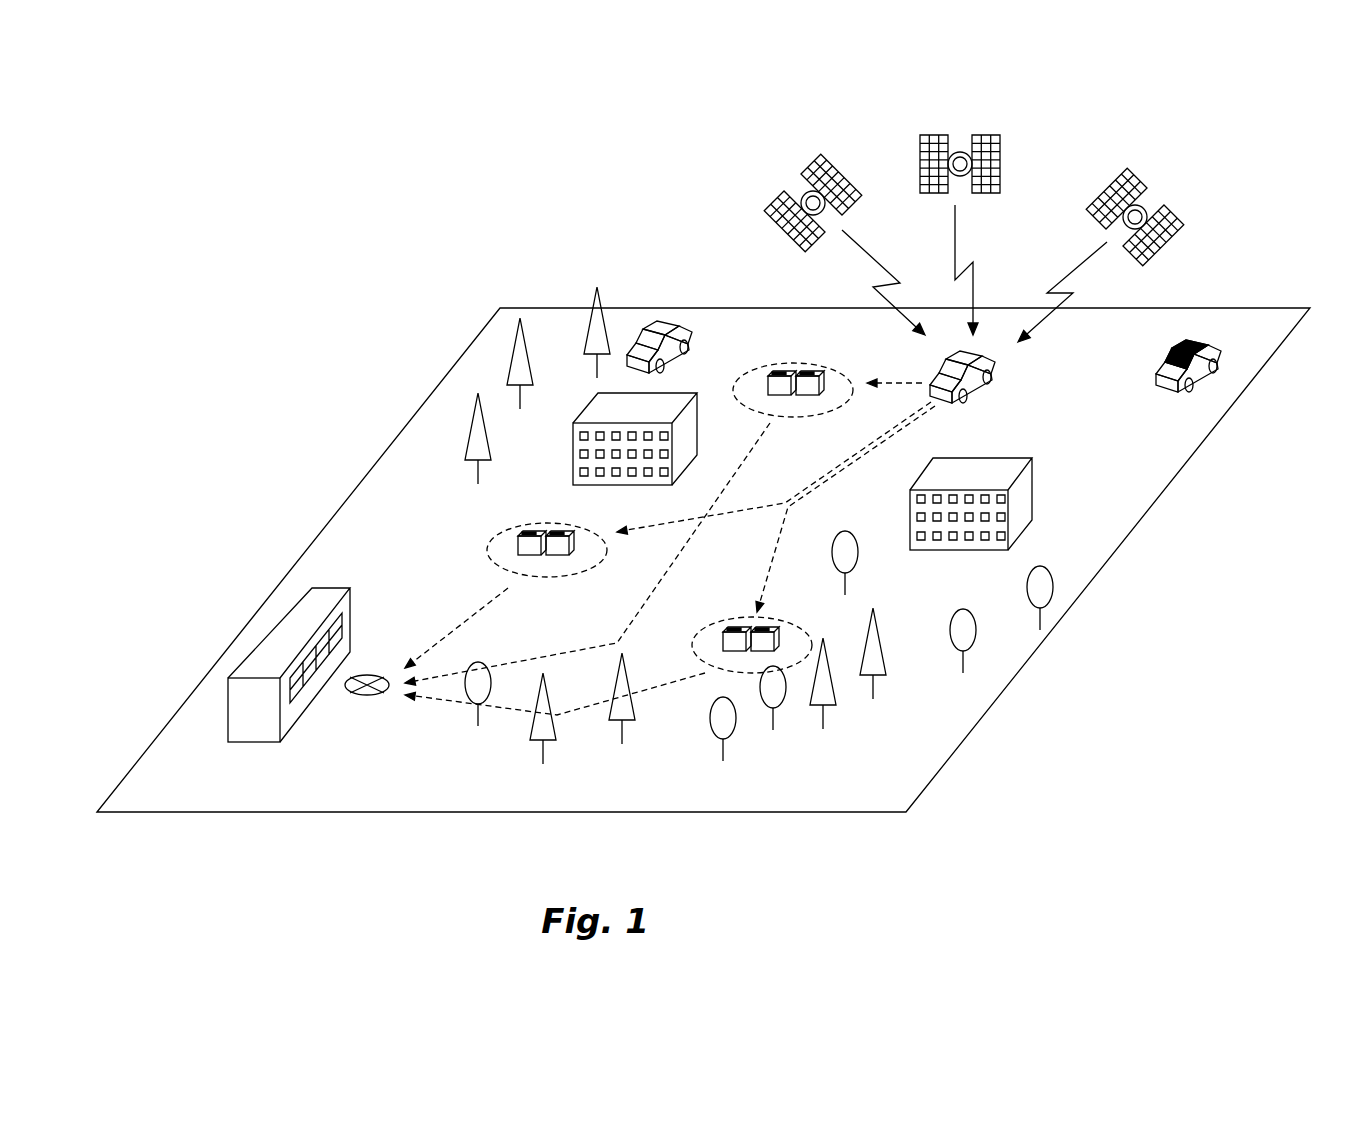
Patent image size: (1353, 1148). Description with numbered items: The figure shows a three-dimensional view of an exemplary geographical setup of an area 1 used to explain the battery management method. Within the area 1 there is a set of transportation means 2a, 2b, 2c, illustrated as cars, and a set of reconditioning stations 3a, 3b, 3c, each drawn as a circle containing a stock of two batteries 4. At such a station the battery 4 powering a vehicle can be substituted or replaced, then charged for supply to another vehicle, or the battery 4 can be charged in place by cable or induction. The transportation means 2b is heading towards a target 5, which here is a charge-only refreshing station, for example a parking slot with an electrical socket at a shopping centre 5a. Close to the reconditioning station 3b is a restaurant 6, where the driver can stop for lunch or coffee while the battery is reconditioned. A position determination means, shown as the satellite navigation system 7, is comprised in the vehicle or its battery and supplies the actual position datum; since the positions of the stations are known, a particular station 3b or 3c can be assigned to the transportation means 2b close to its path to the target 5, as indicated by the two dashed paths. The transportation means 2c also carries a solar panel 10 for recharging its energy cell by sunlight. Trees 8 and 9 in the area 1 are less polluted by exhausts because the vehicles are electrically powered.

The area 1 is at (1264, 316).
The transportation means 2a is at (658, 327).
The transportation means 2b is at (973, 380).
The transportation means 2c is at (1240, 412).
The reconditioning station 3a is at (713, 261).
The reconditioning station 3b is at (517, 527).
The reconditioning station 3c is at (750, 668).
The battery 4 is at (777, 370).
The target 5 is at (372, 693).
The shopping centre 5a is at (270, 660).
The restaurant 6 is at (617, 408).
The satellite navigation system 7 is at (1127, 177).
The tree 8 is at (1040, 597).
The tree 9 is at (873, 658).
The solar panel 10 is at (1212, 376).